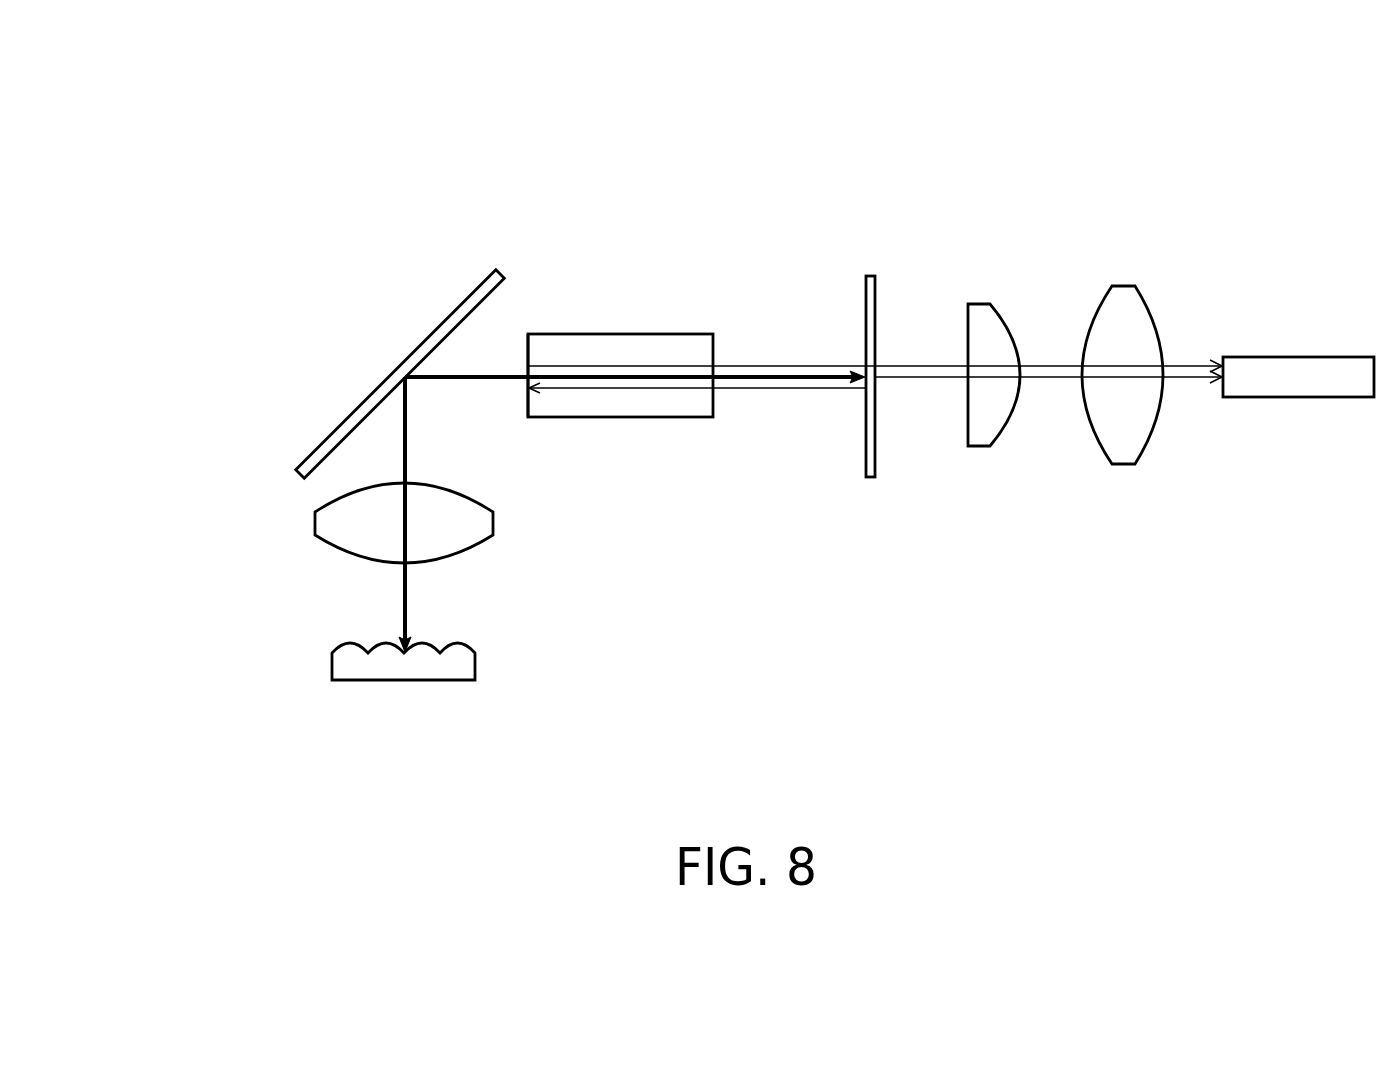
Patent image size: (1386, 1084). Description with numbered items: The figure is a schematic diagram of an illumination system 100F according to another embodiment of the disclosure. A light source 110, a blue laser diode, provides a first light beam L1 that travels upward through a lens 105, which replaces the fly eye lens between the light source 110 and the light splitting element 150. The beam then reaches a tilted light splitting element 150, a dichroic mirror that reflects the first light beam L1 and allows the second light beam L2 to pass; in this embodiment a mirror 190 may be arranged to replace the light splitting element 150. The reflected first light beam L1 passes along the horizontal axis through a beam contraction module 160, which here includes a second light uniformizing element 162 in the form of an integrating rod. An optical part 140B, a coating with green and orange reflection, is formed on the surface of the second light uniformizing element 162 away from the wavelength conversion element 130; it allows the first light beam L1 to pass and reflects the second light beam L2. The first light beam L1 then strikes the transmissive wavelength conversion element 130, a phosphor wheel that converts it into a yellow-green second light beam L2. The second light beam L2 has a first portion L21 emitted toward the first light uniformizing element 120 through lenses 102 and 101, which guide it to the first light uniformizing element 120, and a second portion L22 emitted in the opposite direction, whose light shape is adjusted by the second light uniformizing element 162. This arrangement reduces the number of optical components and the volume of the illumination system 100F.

The illumination system 100F is at (733, 443).
The lens 101 is at (1125, 286).
The lens 102 is at (975, 304).
The lens 105 is at (493, 522).
The light source 110 is at (475, 665).
The first light uniformizing element 120 is at (1300, 357).
The wavelength conversion element 130 is at (870, 275).
The optical part 140B is at (528, 346).
The light splitting element 150 is at (404, 330).
The mirror 190 is at (497, 272).
The beam contraction module 160 is at (657, 342).
The second light uniformizing element 162 is at (631, 323).
The first light beam L1 is at (490, 380).
The second light beam L2 is at (149, 113).
The first portion L21 is at (1043, 380).
The second portion L22 is at (785, 365).